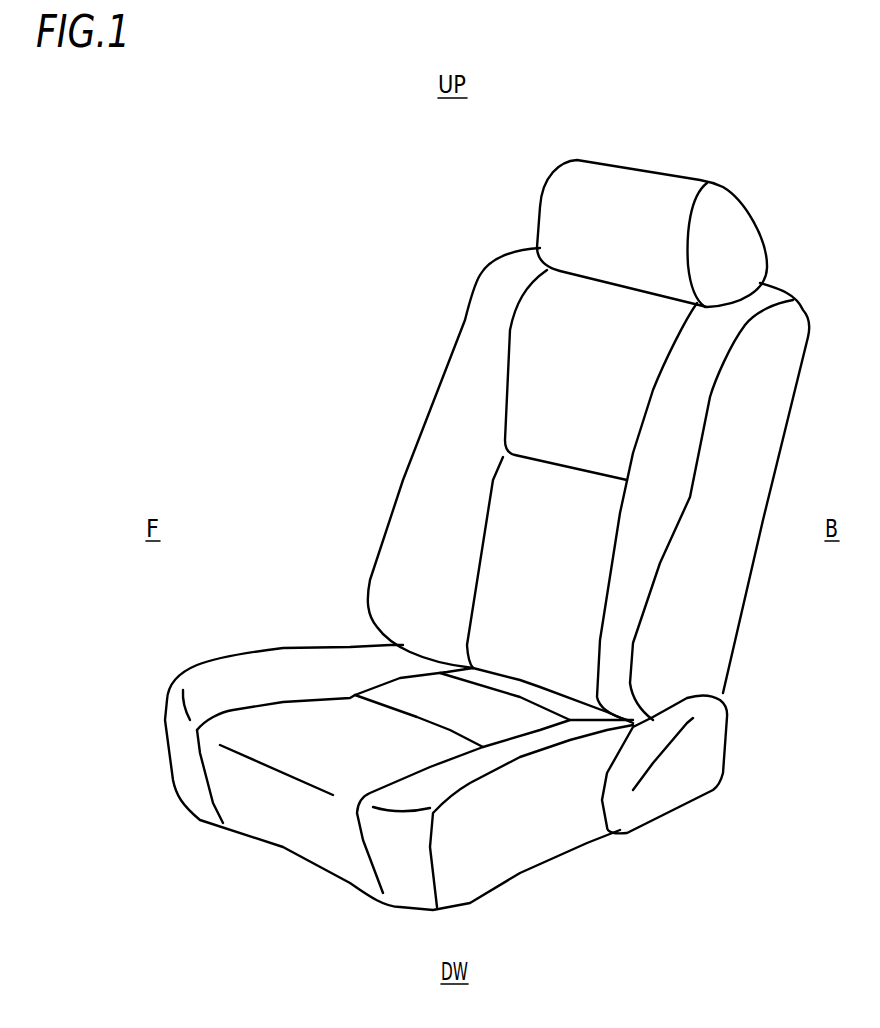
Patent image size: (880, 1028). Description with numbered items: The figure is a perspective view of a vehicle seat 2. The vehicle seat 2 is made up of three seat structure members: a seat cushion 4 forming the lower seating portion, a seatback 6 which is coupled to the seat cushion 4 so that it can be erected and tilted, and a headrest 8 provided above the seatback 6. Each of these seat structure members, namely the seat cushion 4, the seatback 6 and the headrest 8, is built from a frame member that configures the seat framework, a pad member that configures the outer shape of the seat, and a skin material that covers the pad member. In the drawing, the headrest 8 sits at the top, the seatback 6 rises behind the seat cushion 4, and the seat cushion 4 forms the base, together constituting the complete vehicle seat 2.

The vehicle seat 2 is at (740, 161).
The seat cushion 4 is at (313, 677).
The seatback 6 is at (486, 381).
The headrest 8 is at (570, 216).